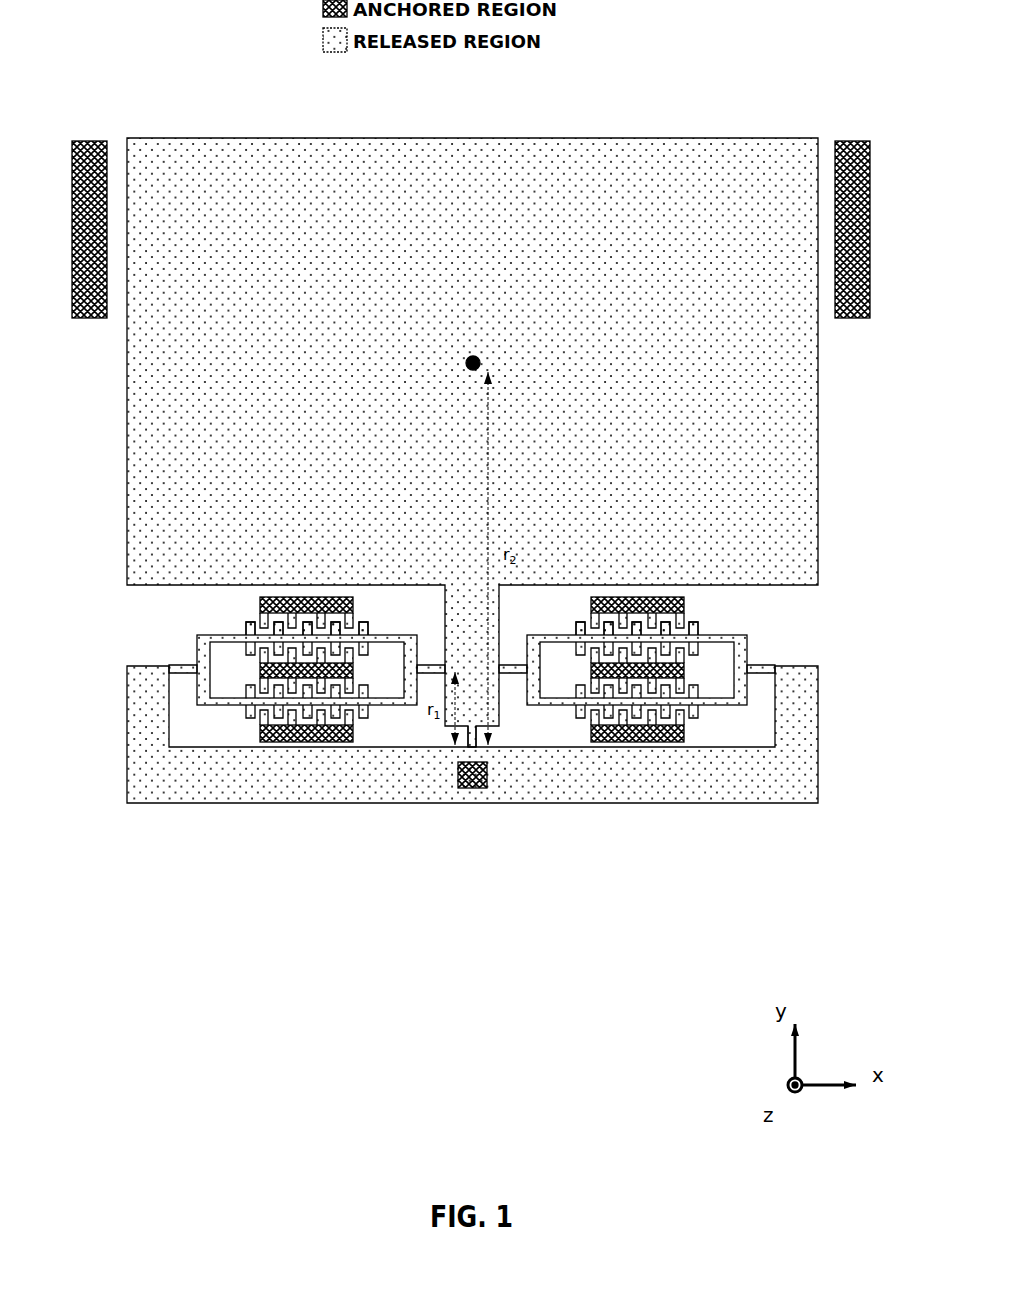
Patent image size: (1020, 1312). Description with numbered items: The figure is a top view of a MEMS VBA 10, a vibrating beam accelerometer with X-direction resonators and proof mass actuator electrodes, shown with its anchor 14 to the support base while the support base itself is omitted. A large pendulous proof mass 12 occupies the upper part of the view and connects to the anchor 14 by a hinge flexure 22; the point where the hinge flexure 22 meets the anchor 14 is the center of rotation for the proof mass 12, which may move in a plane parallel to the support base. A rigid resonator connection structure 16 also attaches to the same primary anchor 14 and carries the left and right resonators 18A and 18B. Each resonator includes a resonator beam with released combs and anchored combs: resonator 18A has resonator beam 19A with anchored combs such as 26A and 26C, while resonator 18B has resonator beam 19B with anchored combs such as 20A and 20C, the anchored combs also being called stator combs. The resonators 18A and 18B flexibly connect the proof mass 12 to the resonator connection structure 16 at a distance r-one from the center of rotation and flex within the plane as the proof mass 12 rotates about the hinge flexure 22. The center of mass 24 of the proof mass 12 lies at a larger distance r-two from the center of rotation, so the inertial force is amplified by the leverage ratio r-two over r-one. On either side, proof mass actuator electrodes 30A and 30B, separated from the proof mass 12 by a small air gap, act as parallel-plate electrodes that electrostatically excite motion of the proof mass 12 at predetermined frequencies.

The MEMS VBA 10 is at (172, 45).
The pendulous proof mass 12 is at (352, 128).
The anchor 14 is at (468, 800).
The resonator connection structure 16 is at (273, 806).
The resonator 18A is at (386, 611).
The resonator 18B is at (574, 612).
The resonator beam 19A is at (195, 646).
The resonator beam 19B is at (750, 646).
The anchored comb 20A is at (687, 605).
The anchored comb 20C is at (687, 733).
The hinge flexure 22 is at (460, 751).
The center of mass 24 is at (465, 352).
The anchored comb 26A is at (257, 602).
The anchored comb 26C is at (257, 733).
The proof mass actuator electrode 30A is at (90, 136).
The proof mass actuator electrode 30B is at (852, 136).